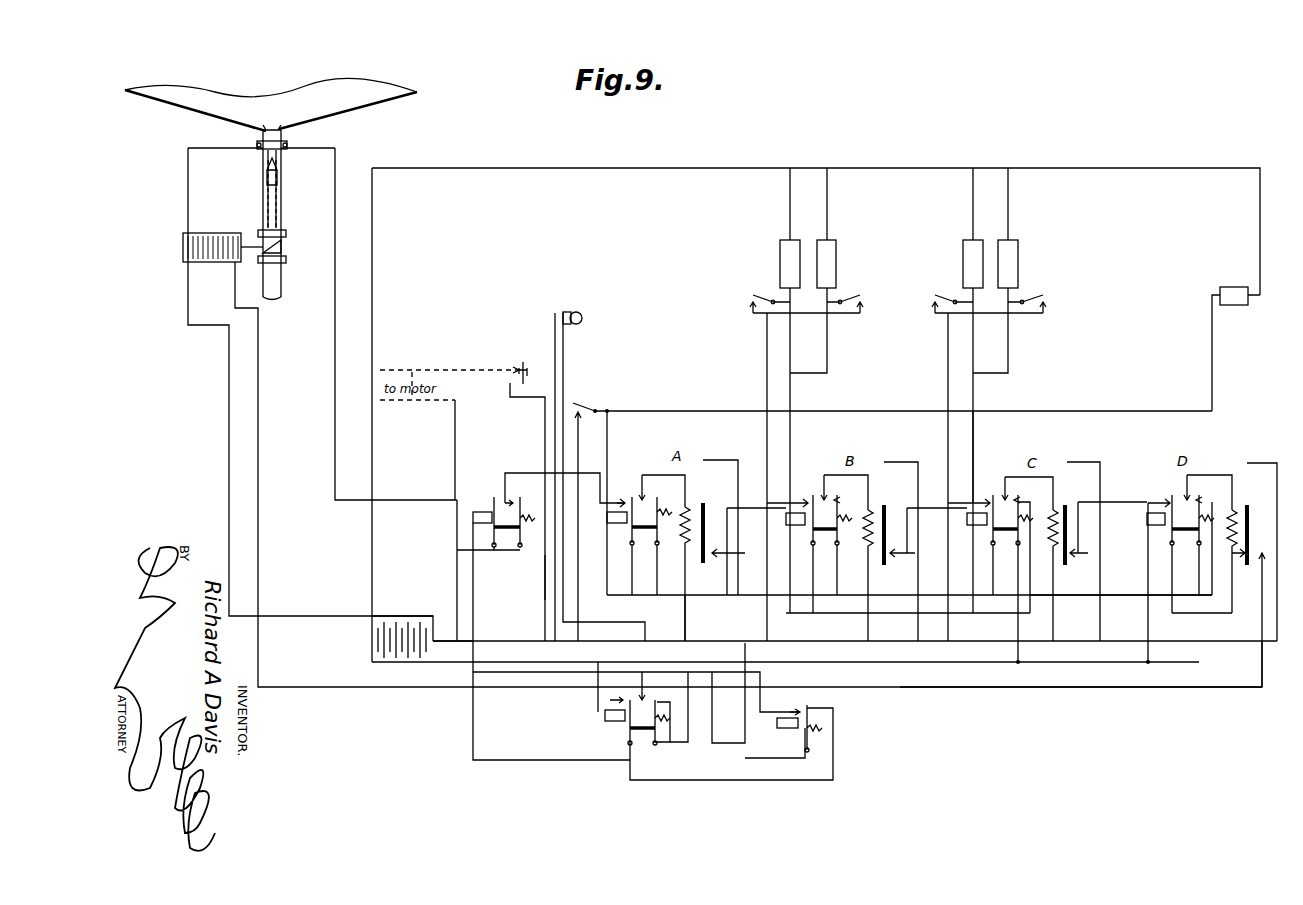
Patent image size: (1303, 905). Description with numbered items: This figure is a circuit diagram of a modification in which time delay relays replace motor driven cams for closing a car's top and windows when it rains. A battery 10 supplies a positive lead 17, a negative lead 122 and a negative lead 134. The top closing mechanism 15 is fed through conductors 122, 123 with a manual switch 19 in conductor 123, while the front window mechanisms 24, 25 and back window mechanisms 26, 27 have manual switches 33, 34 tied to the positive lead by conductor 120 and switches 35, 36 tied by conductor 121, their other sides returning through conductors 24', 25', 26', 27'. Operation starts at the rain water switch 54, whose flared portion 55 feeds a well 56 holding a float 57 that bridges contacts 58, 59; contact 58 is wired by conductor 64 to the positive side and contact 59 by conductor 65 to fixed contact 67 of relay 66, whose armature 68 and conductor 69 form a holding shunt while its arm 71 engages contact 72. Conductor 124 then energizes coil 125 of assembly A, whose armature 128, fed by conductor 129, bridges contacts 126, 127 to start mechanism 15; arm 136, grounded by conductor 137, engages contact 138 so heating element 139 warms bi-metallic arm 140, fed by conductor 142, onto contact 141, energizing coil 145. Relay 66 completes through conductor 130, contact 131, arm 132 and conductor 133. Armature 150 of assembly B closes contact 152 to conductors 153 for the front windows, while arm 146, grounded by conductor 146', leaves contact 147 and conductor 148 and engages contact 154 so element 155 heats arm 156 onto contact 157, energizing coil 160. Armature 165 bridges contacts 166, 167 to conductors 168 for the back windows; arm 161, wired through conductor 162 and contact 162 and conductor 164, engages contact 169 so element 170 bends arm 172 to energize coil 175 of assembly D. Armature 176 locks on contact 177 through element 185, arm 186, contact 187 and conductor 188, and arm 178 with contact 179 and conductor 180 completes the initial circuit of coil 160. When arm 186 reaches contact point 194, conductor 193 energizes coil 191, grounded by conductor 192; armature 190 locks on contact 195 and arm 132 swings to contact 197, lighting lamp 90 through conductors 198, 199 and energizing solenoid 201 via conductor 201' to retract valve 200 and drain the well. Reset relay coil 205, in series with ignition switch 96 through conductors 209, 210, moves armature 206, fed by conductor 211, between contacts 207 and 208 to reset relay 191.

The battery 10 is at (378, 653).
The top closing mechanism 15 is at (1234, 286).
The positive lead 17 is at (1272, 658).
The manually operable switch 19 is at (590, 407).
The front window closing mechanism 24 is at (775, 260).
The conductor 24' is at (771, 204).
The front window closing mechanism 25 is at (840, 260).
The conductor 25' is at (844, 204).
The back window closing mechanism 26 is at (958, 260).
The conductor 26' is at (954, 204).
The back window closing mechanism 27 is at (1021, 260).
The conductor 27' is at (1025, 204).
The window switch 33 is at (756, 293).
The window switch 34 is at (861, 293).
The window switch 35 is at (938, 293).
The window switch 36 is at (1043, 293).
The rain water actuated switch 54 is at (296, 135).
The rain catching portion 55 is at (232, 96).
The tubular well 56 is at (283, 193).
The float 57 is at (264, 176).
The contact member 58 is at (256, 137).
The contact member 59 is at (275, 128).
The conductor 64 is at (187, 202).
The conductor 65 is at (334, 386).
The relay switch 66 is at (473, 519).
The fixed contact 67 is at (492, 510).
The armature 68 is at (497, 548).
The conductor 69 is at (456, 556).
The switch arm 71 is at (521, 547).
The contact 72 is at (513, 501).
The signal lamp 90 is at (577, 311).
The ignition switch 96 is at (522, 364).
The conductor 120 is at (766, 398).
The conductor 121 is at (946, 380).
The negative lead 122 is at (705, 167).
The conductor 123 is at (1065, 410).
The conductor 124 is at (529, 472).
The relay coil 125 is at (607, 519).
The fixed contact 126 is at (622, 500).
The contact 127 is at (644, 497).
The armature 128 is at (630, 530).
The conductor 129 is at (607, 574).
The conductor 130 is at (540, 762).
The contact 131 is at (672, 702).
The switch arm 132 is at (640, 752).
The conductor 133 is at (689, 745).
The negative lead 134 is at (444, 663).
The switch arm 136 is at (660, 548).
The conductor 137 is at (640, 595).
The contact 138 is at (665, 497).
The heating element 139 is at (690, 566).
The bi-metallic arm 140 is at (708, 504).
The contact 141 is at (745, 553).
The conductor 142 is at (705, 598).
The relay coil 145 is at (796, 527).
The switch arm 146 is at (831, 554).
The conductor 146' is at (908, 646).
The contact 147 is at (840, 497).
The conductor 148 is at (686, 622).
The armature 150 is at (826, 474).
The contact 152 is at (800, 500).
The conductors 153 is at (806, 372).
The contact 154 is at (826, 497).
The heating element 155 is at (870, 570).
The bi-metallic arm 156 is at (887, 505).
The contact 157 is at (893, 560).
The relay coil 160 is at (966, 521).
The switch arm 161 is at (1015, 547).
The conductor 162 is at (1022, 503).
The conductor 164 is at (898, 650).
The armature 165 is at (1006, 496).
The contact 166 is at (960, 500).
The contact 167 is at (992, 494).
The conductors 168 is at (988, 372).
The contact 169 is at (1017, 496).
The heating element 170 is at (1054, 560).
The switch arm 172 is at (1068, 505).
The relay coil 175 is at (1147, 518).
The armature 176 is at (1172, 494).
The contact 177 is at (1163, 500).
The switch arm 178 is at (1197, 547).
The contact 179 is at (1200, 499).
The conductor 180 is at (1115, 598).
The heating element 185 is at (1235, 505).
The switch arm 186 is at (1250, 512).
The contact 187 is at (1238, 558).
The conductor 188 is at (1180, 615).
The armature 190 is at (628, 744).
The relay coil 191 is at (605, 718).
The conductor 192 is at (596, 706).
The conductor 193 is at (1010, 690).
The contact point 194 is at (1262, 552).
The contact 195 is at (622, 698).
The contact point 197 is at (644, 698).
The conductor 198 is at (565, 360).
The conductor 199 is at (557, 380).
The reciprocatory valve 200 is at (288, 245).
The solenoid 201 is at (223, 234).
The conductor 201' is at (748, 483).
The relay coil 205 is at (787, 729).
The armature 206 is at (808, 753).
The contact 207 is at (810, 704).
The contact 208 is at (801, 708).
The conductor 209 is at (513, 398).
The conductor 210 is at (728, 693).
The conductor 211 is at (742, 760).